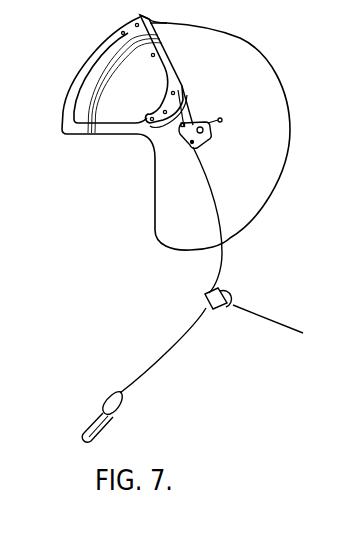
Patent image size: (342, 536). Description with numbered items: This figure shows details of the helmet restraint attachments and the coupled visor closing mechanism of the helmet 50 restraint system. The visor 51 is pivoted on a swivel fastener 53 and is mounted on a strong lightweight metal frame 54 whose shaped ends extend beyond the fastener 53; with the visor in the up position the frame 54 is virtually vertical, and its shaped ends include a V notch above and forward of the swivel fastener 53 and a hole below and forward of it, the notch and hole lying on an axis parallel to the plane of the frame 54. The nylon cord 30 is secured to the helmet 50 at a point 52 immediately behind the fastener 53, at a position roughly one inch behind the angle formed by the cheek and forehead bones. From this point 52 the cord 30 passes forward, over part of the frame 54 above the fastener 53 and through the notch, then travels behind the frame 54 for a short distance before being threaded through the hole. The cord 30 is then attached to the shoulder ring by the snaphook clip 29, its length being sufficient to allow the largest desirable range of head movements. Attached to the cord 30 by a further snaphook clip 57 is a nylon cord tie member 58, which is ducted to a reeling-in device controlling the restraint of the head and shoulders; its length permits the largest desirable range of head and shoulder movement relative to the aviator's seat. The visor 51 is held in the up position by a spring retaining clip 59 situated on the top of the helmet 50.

The snaphook clip 29 is at (98, 412).
The nylon cord 30 is at (223, 257).
The helmet 50 is at (270, 77).
The visor 51 is at (81, 65).
The point 52 is at (223, 120).
The swivel fastener 53 is at (208, 137).
The metal frame 54 is at (190, 111).
The snaphook clip 57 is at (227, 297).
The nylon cord tie member 58 is at (278, 322).
The spring retaining clip 59 is at (163, 23).